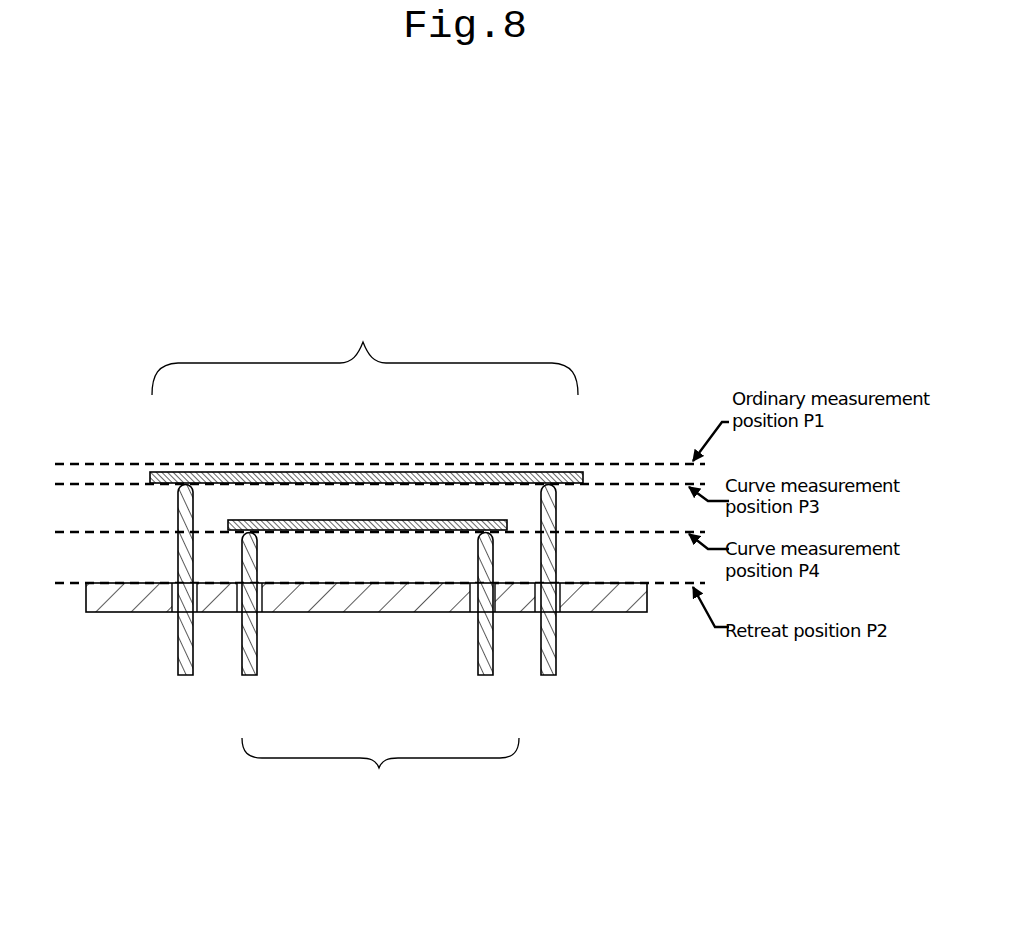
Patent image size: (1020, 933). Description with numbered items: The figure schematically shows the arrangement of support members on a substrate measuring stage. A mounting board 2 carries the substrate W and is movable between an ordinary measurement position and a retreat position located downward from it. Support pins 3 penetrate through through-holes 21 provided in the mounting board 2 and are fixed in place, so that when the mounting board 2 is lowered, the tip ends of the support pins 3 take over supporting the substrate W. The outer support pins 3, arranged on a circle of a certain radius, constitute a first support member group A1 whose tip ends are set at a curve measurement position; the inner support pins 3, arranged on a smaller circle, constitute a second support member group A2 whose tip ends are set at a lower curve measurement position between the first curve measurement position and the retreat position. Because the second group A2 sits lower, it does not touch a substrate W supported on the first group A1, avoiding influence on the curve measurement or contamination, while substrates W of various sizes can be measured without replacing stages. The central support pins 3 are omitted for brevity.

The mounting board 2 is at (98, 582).
The support pin 3 is at (179, 484).
The through-hole 21 is at (196, 612).
The substrate W is at (298, 520).
The first support member group A1 is at (365, 354).
The second support member group A2 is at (380, 768).